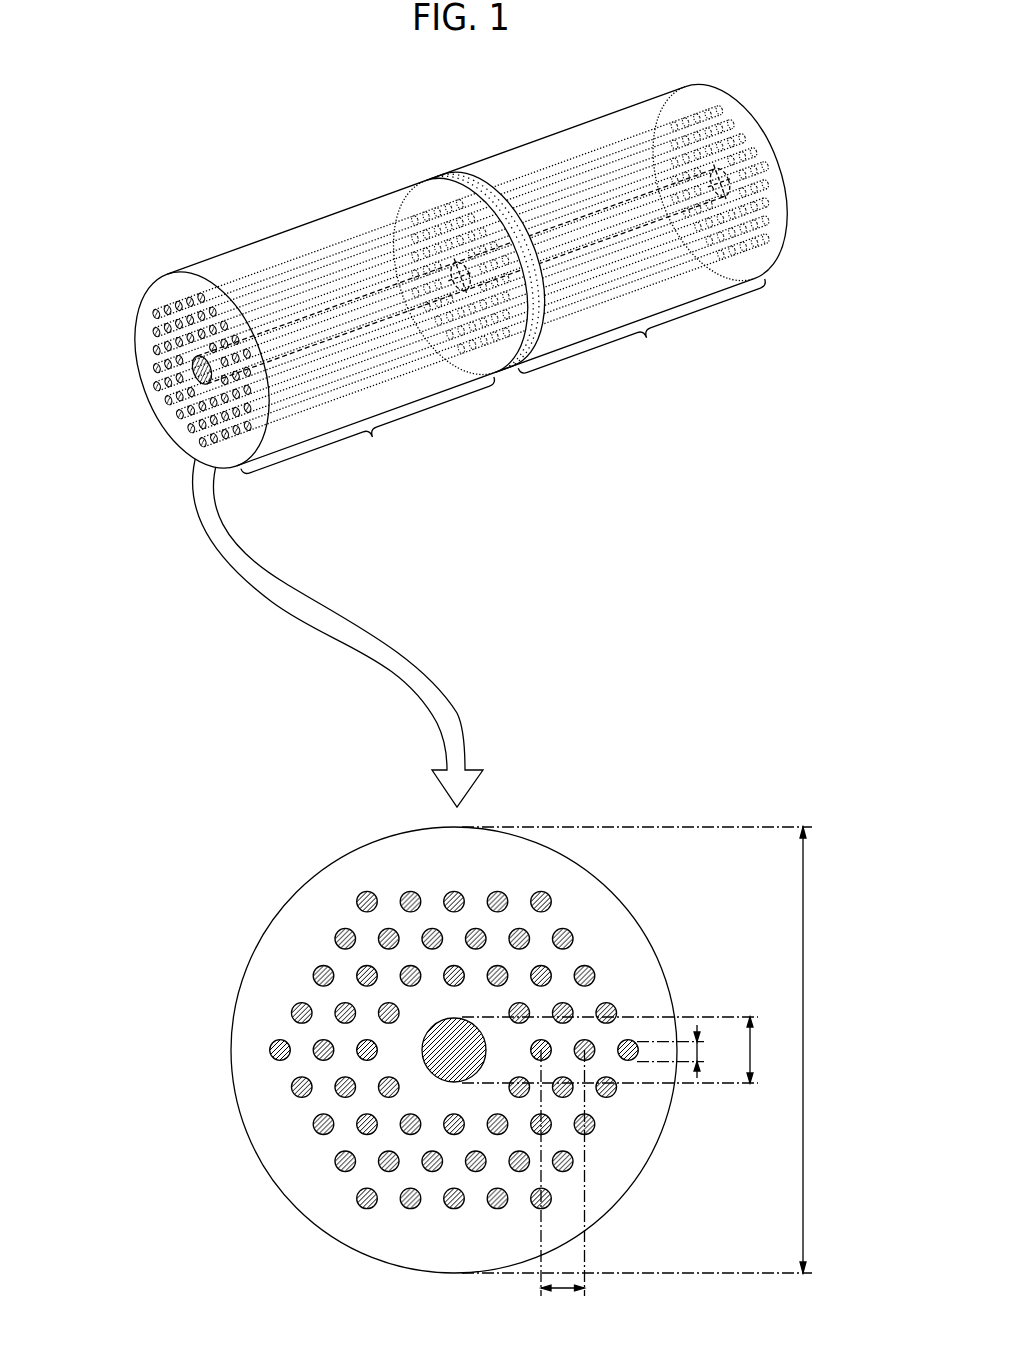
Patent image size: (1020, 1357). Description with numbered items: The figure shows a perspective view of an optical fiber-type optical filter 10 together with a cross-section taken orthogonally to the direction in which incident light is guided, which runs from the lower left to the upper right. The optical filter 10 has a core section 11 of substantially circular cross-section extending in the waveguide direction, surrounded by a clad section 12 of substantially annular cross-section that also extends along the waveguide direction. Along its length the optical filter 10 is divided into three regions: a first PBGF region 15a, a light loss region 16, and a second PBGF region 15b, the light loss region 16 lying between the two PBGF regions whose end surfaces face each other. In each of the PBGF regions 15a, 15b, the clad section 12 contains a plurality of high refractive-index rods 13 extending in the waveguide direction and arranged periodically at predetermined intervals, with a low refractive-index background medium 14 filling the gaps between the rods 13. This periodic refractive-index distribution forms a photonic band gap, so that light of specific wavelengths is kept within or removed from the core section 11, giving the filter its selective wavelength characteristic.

The optical fiber-type optical filter 10 is at (239, 130).
The core section 11 is at (195, 378).
The clad section 12 is at (328, 213).
The rod 13 is at (157, 315).
The background medium 14 is at (182, 437).
The first PBGF region 15a is at (370, 430).
The second PBGF region 15b is at (643, 332).
The light loss region 16 is at (505, 372).